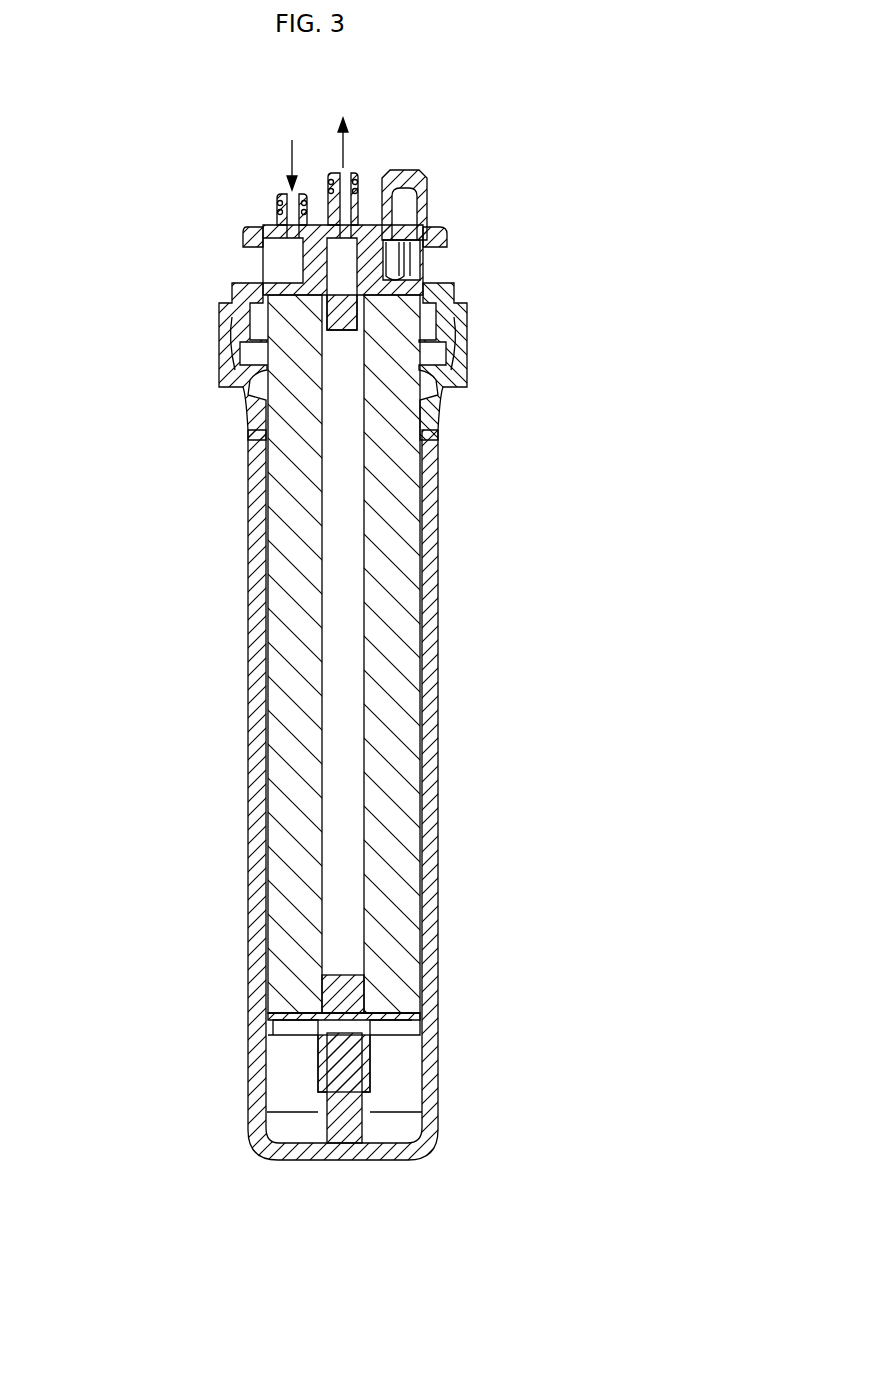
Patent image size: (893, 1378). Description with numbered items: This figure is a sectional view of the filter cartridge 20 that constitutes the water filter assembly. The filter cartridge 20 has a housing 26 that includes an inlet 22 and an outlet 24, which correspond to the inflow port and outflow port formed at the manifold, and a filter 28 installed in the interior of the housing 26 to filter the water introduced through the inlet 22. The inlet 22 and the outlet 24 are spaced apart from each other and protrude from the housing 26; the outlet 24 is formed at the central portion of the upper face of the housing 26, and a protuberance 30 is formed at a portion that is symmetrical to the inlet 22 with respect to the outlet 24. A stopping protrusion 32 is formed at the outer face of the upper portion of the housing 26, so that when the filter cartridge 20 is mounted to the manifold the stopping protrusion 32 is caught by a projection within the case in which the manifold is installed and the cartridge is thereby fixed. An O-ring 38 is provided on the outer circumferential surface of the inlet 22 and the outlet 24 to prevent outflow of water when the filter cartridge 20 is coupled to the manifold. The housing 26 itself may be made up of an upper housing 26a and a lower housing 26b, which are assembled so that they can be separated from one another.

The filter cartridge 20 is at (458, 160).
The inlet 22 is at (280, 192).
The outlet 24 is at (352, 174).
The housing 26 is at (107, 310).
The upper housing 26a is at (220, 333).
The lower housing 26b is at (252, 470).
The filter 28 is at (285, 660).
The protuberance 30 is at (428, 200).
The stopping protrusion 32 is at (440, 245).
The O-ring 38 is at (278, 218).